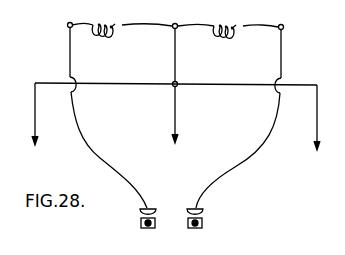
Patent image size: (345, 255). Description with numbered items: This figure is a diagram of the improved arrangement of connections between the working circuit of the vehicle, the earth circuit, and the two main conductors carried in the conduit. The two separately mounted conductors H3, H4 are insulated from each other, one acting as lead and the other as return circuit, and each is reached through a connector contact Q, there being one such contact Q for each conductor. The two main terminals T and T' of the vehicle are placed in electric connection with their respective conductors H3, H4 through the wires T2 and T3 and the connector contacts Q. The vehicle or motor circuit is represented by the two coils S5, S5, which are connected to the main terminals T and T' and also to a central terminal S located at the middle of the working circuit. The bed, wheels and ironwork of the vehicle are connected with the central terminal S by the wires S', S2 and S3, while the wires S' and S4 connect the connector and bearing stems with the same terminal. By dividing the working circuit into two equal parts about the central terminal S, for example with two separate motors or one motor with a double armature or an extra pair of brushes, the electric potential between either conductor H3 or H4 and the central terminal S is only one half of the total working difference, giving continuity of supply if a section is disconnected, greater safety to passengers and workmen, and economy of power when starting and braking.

The main terminal T is at (55, 18).
The coil S5 is at (175, 21).
The central terminal S is at (180, 18).
The main terminal T' is at (290, 19).
The wire S' is at (183, 58).
The wire S2 is at (176, 93).
The wire S3 is at (176, 116).
The wire S4 is at (182, 115).
The wire T2 is at (103, 118).
The wire T3 is at (238, 119).
The connector contact Q is at (160, 198).
The conductor H3 is at (147, 228).
The conductor H4 is at (195, 228).